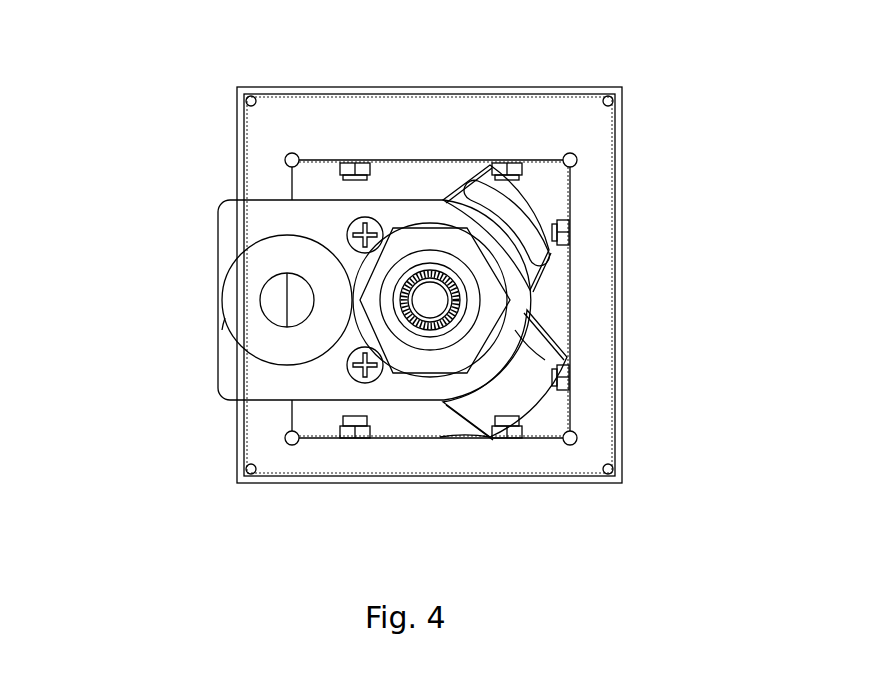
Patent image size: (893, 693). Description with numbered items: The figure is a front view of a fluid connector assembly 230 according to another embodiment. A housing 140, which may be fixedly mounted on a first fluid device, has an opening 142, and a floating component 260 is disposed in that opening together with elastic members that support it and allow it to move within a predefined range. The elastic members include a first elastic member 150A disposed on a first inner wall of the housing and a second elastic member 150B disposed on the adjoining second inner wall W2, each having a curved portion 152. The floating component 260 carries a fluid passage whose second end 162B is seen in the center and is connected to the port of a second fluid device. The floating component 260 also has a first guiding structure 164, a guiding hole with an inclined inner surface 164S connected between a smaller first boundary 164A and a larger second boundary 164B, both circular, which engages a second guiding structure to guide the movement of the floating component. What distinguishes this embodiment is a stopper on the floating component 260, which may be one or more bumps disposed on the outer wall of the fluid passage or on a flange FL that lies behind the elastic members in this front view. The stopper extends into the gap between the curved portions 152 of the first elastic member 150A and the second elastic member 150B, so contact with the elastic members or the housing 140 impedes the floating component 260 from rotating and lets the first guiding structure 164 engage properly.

The fluid connector assembly 230 is at (68, 53).
The housing 140 is at (276, 103).
The opening 142 is at (300, 176).
The first guiding structure 164 is at (150, 282).
The first boundary 164A is at (262, 288).
The inclined inner surface 164S is at (218, 313).
The second boundary 164B is at (238, 325).
The floating component 260 is at (385, 378).
The second end 162B is at (433, 330).
The first elastic member 150A is at (529, 154).
The second elastic member 150B is at (598, 337).
The curved portion 152 is at (467, 178).
The second inner wall W2 is at (568, 288).
The flange FL is at (522, 393).